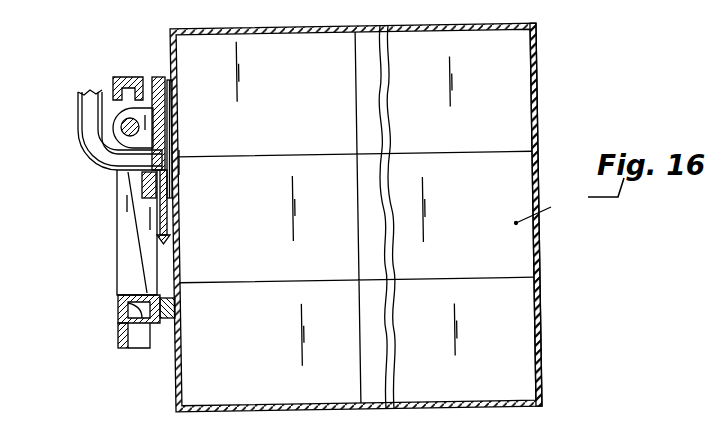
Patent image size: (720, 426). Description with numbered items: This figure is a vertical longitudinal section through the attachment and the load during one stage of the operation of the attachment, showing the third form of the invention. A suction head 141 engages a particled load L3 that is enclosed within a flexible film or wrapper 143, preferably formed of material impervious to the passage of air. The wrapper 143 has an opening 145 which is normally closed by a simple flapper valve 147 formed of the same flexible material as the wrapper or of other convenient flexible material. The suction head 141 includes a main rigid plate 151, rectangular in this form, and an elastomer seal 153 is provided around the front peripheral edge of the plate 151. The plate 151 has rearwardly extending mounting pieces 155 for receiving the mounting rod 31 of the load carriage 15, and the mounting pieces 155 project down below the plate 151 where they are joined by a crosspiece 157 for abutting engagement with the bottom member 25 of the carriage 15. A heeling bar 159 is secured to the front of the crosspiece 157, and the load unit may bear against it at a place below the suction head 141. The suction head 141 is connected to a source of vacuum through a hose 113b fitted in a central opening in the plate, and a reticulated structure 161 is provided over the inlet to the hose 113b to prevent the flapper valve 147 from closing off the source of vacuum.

The suction head 141 is at (350, 208).
The flexible film or wrapper 143 is at (536, 122).
The particled load L3 is at (545, 208).
The hose 113b is at (88, 123).
The load carriage 15 is at (126, 76).
The mounting bar or rod 31 is at (128, 135).
The elastomer seal 153 is at (163, 76).
The flapper valve 147 is at (184, 136).
The opening 145 is at (179, 162).
The reticulated structure 161 is at (146, 188).
The main rigid plate 151 is at (160, 217).
The mounting pieces 155 is at (144, 225).
The crosspiece 157 is at (118, 303).
The heeling bar 159 is at (179, 310).
The bottom member 25 is at (122, 333).